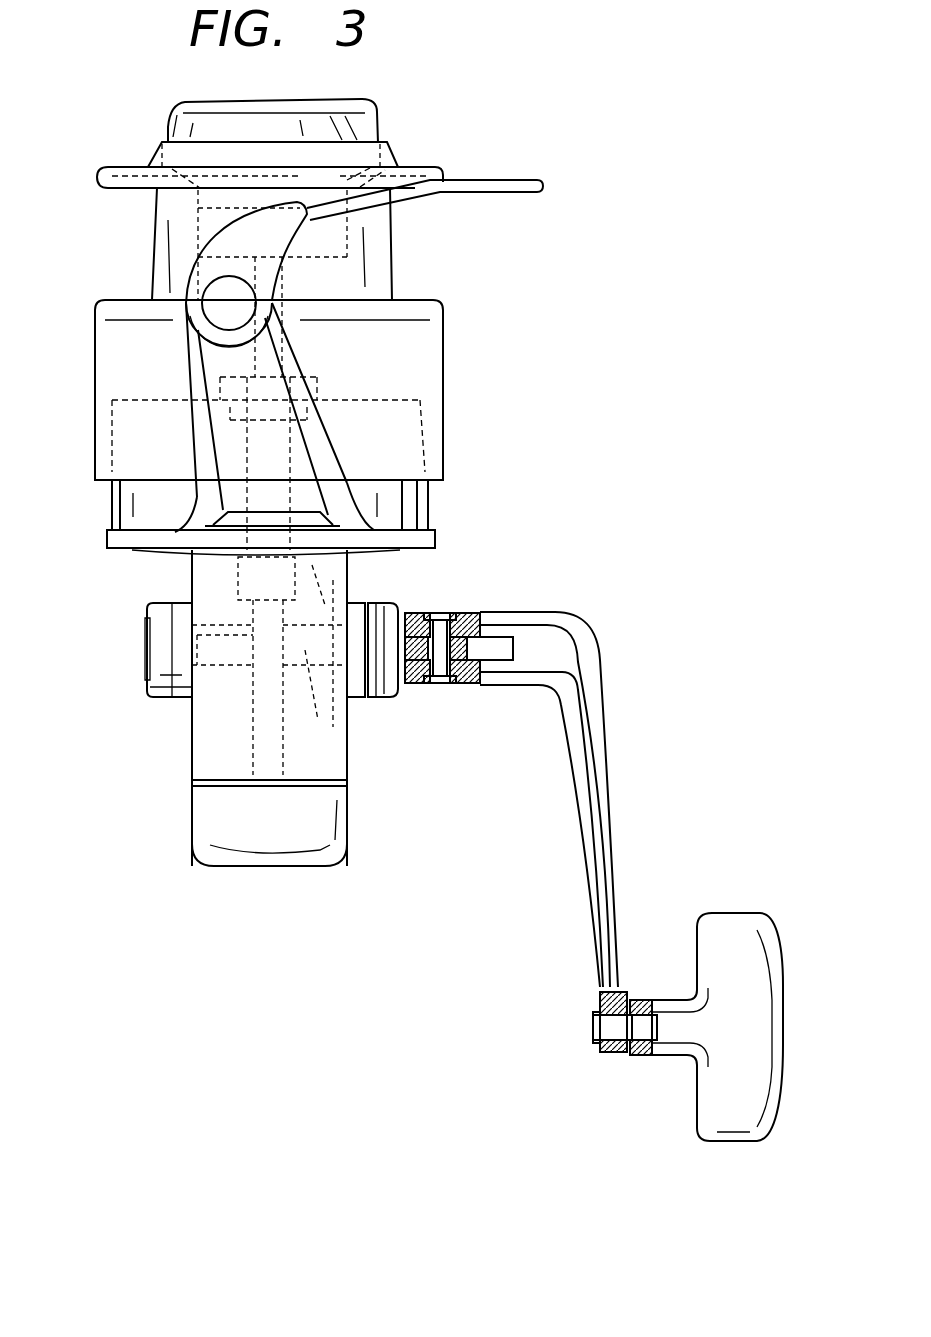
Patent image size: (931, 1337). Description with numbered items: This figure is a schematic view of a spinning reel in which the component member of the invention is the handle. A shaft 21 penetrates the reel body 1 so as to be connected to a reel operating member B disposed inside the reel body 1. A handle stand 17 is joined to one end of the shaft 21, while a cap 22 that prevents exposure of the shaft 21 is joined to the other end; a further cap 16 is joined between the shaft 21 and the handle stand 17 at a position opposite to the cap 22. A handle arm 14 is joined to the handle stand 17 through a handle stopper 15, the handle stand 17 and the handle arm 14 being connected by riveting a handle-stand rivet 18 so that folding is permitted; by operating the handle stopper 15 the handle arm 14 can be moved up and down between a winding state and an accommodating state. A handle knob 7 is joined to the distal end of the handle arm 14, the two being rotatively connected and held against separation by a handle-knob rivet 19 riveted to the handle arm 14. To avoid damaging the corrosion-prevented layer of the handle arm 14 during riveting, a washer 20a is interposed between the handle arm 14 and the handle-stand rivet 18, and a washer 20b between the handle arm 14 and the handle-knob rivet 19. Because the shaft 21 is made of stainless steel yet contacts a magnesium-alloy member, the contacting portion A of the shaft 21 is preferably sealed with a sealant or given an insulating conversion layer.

The reel body 1 is at (190, 750).
The handle knob 7 is at (710, 1110).
The handle arm 14 is at (605, 768).
The handle stopper 15 is at (507, 650).
The cap 16 is at (395, 610).
The handle stand 17 is at (412, 683).
The handle-stand rivet 18 is at (445, 683).
The handle-knob rivet 19 is at (605, 1054).
The washer 20a is at (462, 612).
The washer 20b is at (598, 1003).
The shaft 21 is at (333, 658).
The cap 22 is at (157, 655).
The portion A is at (378, 697).
The reel operating member B is at (305, 720).